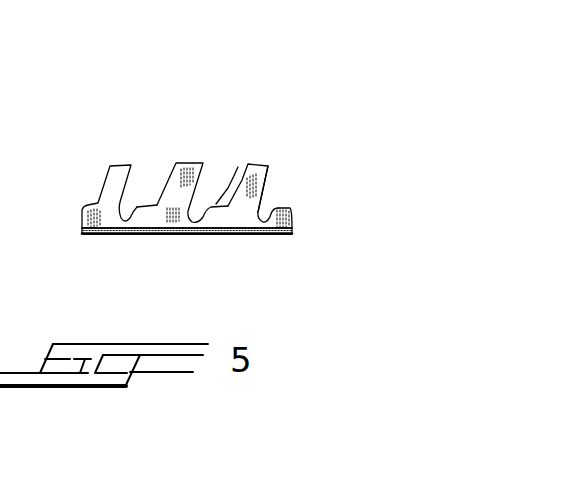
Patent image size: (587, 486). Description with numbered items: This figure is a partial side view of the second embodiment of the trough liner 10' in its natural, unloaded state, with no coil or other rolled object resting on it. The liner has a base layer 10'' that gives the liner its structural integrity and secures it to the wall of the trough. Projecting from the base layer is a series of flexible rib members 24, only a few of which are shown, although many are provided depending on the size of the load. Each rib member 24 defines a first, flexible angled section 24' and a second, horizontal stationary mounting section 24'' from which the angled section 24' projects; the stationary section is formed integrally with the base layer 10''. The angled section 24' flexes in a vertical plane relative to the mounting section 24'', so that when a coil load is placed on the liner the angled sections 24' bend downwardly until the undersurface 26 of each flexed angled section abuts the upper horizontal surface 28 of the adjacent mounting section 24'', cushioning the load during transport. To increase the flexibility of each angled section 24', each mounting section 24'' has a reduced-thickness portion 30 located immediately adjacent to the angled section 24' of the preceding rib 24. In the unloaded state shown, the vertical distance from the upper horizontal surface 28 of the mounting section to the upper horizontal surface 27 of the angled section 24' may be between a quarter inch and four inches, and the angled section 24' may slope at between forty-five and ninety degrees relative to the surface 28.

The trough liner 10' is at (187, 133).
The base layer 10'' is at (187, 267).
The flexible rib member 24 is at (276, 165).
The flexible angled section 24' is at (307, 193).
The horizontal stationary mounting section 24'' is at (86, 184).
The undersurface 26 is at (133, 175).
The upper horizontal surface of the flexible angled section 27 is at (120, 166).
The upper horizontal surface of the mounting section 28 is at (238, 167).
The reduced-thickness portion 30 is at (115, 230).